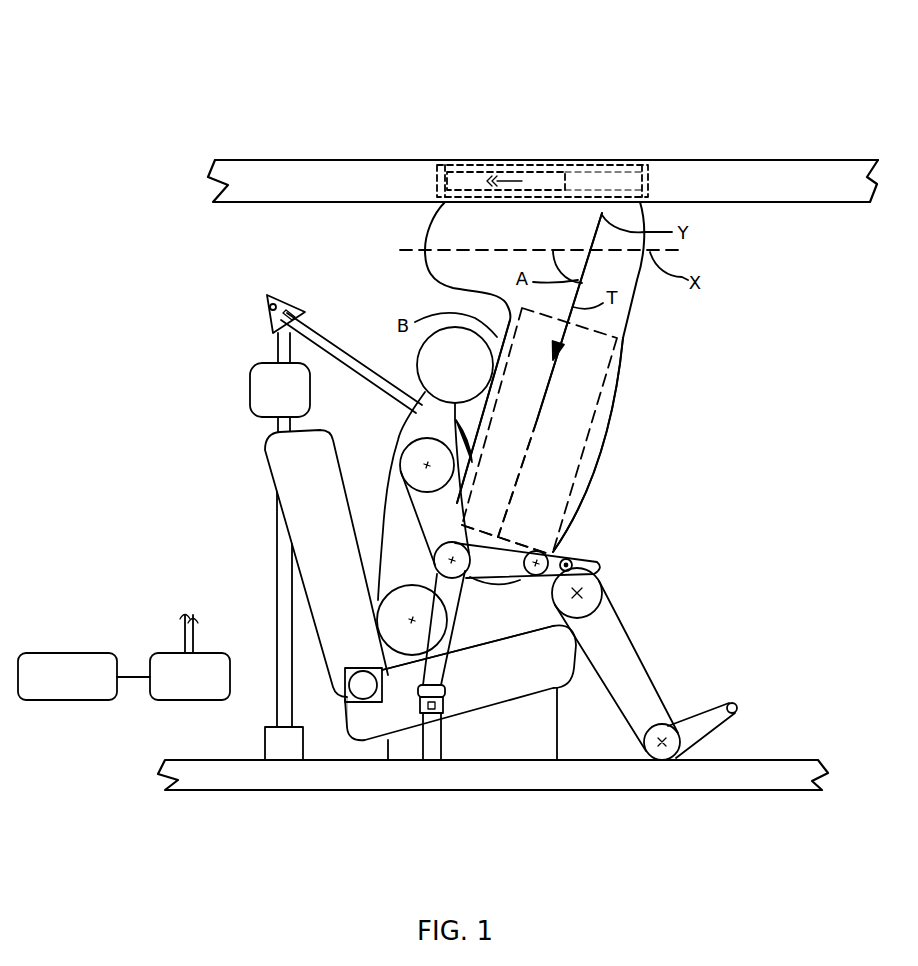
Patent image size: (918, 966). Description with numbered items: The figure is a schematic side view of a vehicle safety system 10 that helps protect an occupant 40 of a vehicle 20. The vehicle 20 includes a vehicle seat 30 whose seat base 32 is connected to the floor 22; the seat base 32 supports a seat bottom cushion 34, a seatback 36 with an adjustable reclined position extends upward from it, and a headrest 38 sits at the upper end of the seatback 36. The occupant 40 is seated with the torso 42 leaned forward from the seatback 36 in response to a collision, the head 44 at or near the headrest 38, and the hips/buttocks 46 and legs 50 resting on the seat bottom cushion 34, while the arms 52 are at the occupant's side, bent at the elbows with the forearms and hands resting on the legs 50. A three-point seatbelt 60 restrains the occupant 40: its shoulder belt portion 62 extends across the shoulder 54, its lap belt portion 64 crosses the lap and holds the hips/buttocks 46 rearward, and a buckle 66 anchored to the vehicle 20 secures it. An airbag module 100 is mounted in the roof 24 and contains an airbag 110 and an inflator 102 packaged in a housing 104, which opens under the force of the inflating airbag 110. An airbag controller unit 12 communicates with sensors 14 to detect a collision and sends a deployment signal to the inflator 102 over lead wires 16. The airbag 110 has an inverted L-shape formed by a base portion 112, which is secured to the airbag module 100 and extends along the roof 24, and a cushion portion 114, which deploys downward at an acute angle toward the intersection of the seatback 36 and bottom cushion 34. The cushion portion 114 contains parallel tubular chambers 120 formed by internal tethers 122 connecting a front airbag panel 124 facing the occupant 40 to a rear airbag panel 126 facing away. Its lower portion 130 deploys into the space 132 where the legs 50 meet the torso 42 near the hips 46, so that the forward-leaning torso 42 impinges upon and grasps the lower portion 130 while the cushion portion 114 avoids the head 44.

The vehicle safety system 10 is at (157, 200).
The airbag controller unit 12 is at (173, 653).
The sensors 14 is at (70, 653).
The lead wires 16 is at (367, 178).
The vehicle 20 is at (246, 126).
The floor 22 is at (144, 273).
The roof 24 is at (787, 182).
The vehicle seat 30 is at (290, 678).
The seat base 32 is at (508, 738).
The seat bottom cushion 34 is at (467, 700).
The seatback 36 is at (327, 567).
The headrest 38 is at (258, 396).
The occupant 40 is at (514, 543).
The torso 42 is at (398, 492).
The head 44 is at (463, 362).
The hips/buttocks 46 is at (370, 623).
The legs 50 is at (483, 627).
The arms 52 is at (442, 513).
The shoulder 54 is at (408, 422).
The seatbelt 60 is at (392, 387).
The shoulder belt portion 62 is at (337, 350).
The lap belt portion 64 is at (453, 610).
The buckle 66 is at (450, 687).
The airbag module 100 is at (534, 107).
The inflator 102 is at (530, 163).
The housing 104 is at (642, 160).
The airbag 110 is at (545, 336).
The base portion 112 is at (498, 232).
The cushion portion 114 is at (557, 425).
The tubular chambers 120 is at (540, 487).
The internal tethers 122 is at (613, 380).
The front airbag panel 124 is at (493, 329).
The rear airbag panel 126 is at (610, 408).
The lower portion 130 is at (522, 551).
The space 132 is at (484, 515).